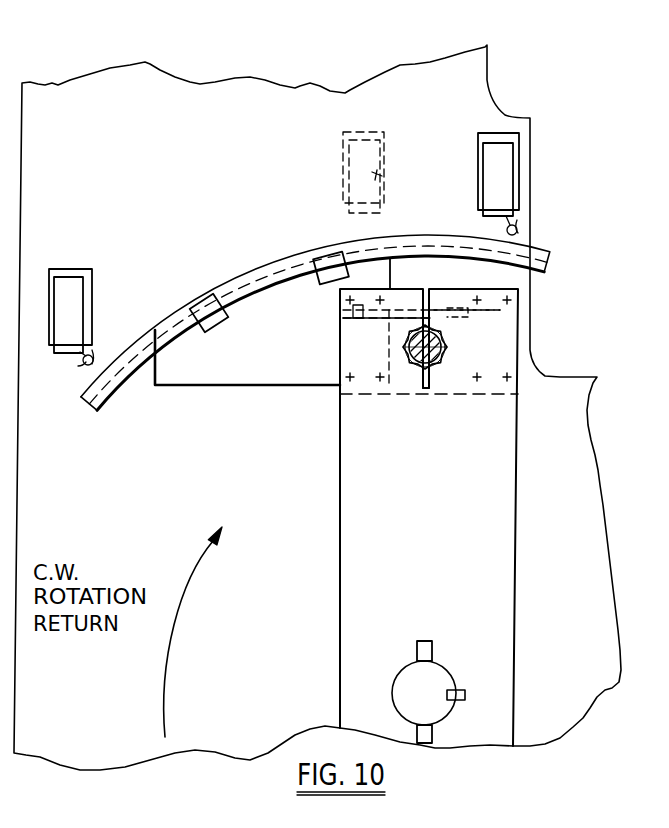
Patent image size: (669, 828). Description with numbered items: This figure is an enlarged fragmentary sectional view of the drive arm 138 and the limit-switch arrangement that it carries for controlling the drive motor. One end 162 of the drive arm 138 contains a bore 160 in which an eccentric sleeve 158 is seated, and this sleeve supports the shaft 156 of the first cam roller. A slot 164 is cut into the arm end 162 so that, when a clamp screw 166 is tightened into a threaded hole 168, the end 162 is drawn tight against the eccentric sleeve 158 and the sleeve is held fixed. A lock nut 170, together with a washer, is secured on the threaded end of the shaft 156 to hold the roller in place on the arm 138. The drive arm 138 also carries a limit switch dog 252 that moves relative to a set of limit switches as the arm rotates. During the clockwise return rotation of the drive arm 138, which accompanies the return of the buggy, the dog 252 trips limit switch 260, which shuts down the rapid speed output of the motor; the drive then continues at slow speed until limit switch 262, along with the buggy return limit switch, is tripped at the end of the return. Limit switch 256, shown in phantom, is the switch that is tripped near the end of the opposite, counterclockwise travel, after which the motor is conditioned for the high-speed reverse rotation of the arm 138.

The drive arm 138 is at (498, 457).
The limit switch dog 252 is at (537, 260).
The limit switch 256 is at (385, 173).
The limit switch 260 is at (70, 325).
The limit switch 262 is at (500, 185).
The end of drive arm 162 is at (348, 408).
The slot 164 is at (423, 317).
The clamp screw 166 is at (343, 310).
The threaded hole 168 is at (455, 305).
The shaft 156 is at (447, 347).
The eccentric sleeve 158 is at (443, 337).
The bore 160 is at (450, 354).
The lock nut 170 is at (418, 372).